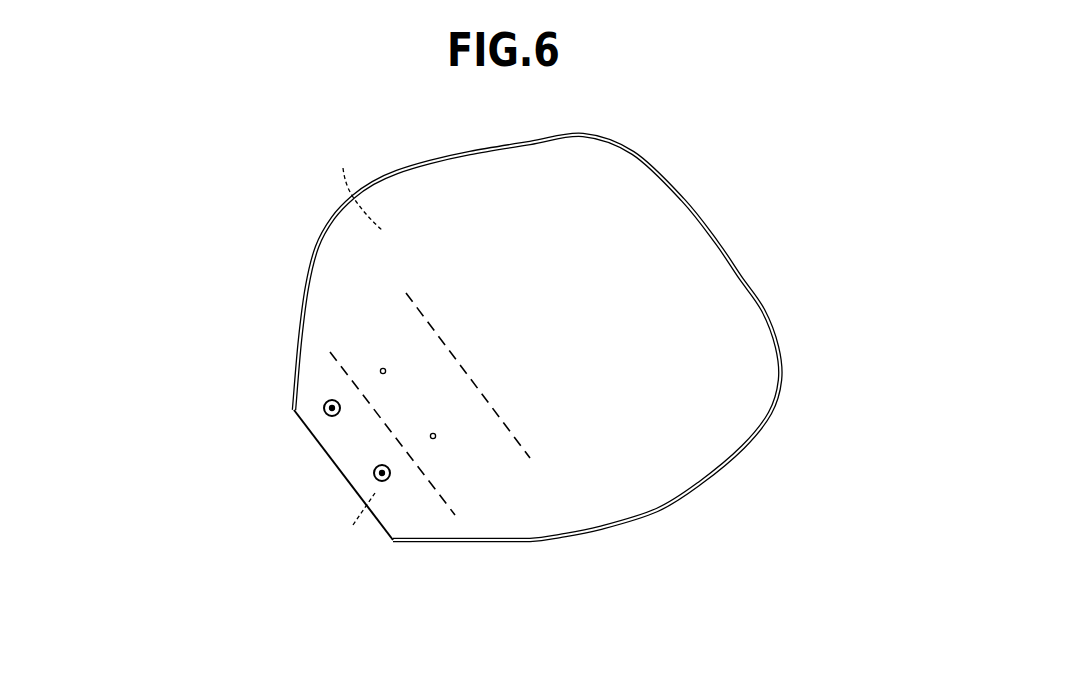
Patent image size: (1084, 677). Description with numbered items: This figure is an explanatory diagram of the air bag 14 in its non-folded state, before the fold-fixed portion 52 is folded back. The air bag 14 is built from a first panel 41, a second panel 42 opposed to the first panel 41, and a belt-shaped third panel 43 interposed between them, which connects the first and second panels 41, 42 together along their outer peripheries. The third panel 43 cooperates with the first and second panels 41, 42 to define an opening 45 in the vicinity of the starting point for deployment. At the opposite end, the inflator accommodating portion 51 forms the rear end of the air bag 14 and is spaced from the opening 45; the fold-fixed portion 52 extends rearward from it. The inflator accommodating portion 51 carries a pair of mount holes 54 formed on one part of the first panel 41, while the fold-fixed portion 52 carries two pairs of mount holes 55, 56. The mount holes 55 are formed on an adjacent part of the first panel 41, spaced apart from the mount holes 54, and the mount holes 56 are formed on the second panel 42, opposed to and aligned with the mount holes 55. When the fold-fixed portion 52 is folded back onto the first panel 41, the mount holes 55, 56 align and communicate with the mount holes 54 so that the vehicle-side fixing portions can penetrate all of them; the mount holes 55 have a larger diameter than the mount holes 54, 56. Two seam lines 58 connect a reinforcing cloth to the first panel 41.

The air bag 14 is at (300, 215).
The first panel 41 is at (455, 188).
The second panel 42 is at (355, 184).
The third panel 43 is at (395, 173).
The opening 45 is at (322, 438).
The inflator accommodating portion 51 is at (480, 503).
The fold-fixed portion 52 is at (354, 527).
The mount holes 54 is at (383, 368).
The mount holes 55 is at (323, 403).
The mount holes 56 is at (324, 411).
The seam lines 58 is at (505, 427).